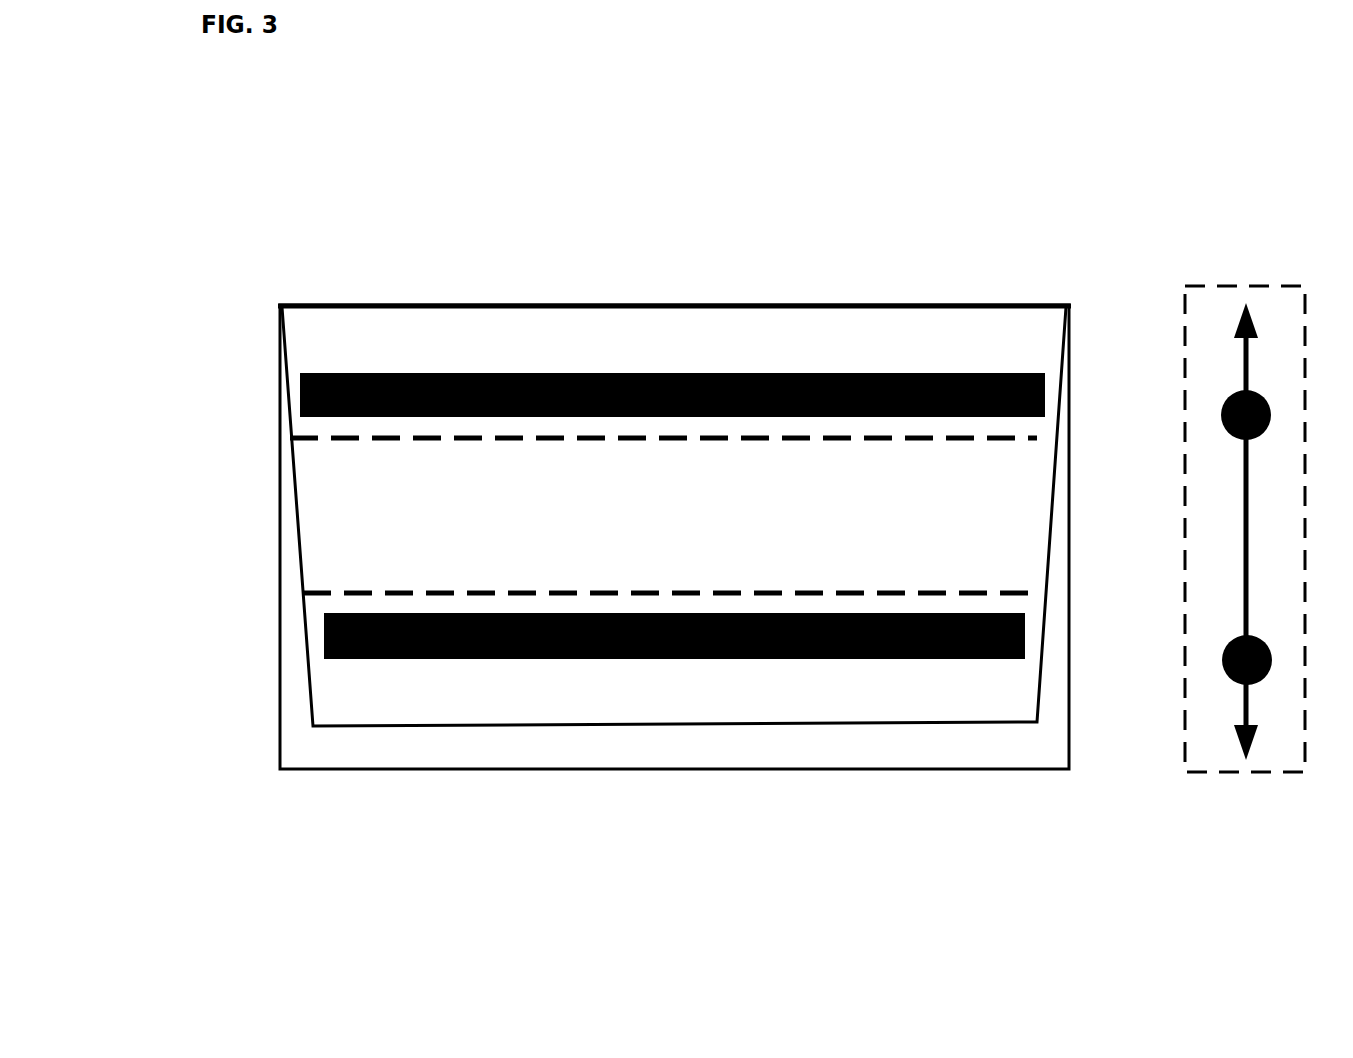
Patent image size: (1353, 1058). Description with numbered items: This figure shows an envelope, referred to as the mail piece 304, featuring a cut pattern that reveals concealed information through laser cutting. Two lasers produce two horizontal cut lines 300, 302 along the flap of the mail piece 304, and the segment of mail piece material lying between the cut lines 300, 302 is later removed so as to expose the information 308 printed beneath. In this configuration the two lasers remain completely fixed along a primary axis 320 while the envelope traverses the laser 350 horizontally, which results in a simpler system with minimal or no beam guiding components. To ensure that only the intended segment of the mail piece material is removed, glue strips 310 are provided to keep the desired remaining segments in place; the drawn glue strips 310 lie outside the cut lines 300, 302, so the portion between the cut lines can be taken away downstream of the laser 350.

The horizontal cut line 300 is at (318, 447).
The horizontal cut line 302 is at (316, 604).
The mail piece 304 is at (834, 228).
The information 308 is at (676, 515).
The glue strips 310 is at (1050, 418).
The primary axis 320 is at (1241, 531).
The laser 350 is at (1213, 278).